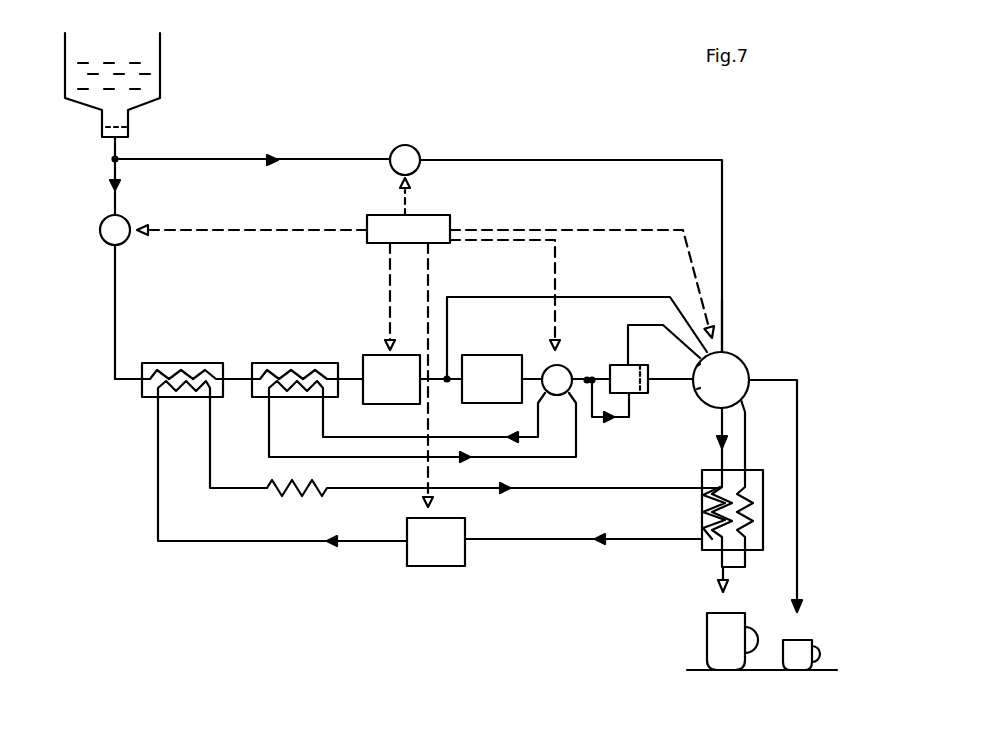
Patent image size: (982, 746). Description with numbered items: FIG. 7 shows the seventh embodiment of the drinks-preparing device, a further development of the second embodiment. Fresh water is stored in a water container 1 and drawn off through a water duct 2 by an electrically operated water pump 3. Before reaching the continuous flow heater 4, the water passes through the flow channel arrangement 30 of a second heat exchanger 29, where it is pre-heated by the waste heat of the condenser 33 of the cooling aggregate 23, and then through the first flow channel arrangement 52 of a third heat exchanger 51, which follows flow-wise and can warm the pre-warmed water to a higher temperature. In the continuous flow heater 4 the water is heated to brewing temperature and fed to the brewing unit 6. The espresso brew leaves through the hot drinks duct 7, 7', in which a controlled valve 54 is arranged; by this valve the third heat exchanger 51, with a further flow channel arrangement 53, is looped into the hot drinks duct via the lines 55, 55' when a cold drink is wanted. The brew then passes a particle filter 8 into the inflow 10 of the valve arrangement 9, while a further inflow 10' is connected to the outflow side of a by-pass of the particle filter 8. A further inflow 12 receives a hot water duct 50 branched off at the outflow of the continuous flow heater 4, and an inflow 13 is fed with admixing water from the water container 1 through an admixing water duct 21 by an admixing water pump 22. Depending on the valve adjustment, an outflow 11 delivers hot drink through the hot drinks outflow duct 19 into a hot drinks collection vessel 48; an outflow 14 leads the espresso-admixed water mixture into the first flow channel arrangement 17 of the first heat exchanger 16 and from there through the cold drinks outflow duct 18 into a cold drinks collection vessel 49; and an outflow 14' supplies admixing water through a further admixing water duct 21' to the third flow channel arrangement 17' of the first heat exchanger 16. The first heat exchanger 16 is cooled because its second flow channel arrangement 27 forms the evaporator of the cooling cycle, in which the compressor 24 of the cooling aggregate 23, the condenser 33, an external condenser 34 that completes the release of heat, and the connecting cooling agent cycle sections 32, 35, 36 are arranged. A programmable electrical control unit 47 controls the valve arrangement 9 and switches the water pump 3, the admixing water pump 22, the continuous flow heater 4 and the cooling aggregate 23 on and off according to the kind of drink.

The water container 1 is at (140, 80).
The water duct 2 is at (108, 213).
The water pump 3 is at (112, 232).
The continuous flow heater 4 is at (404, 370).
The brewing unit 6 is at (490, 370).
The hot drinks duct 7 is at (566, 351).
The hot drinks duct 7' is at (587, 362).
The particle filter 8 is at (620, 378).
The valve arrangement 9 is at (722, 377).
The inflow 10 is at (679, 402).
The further inflow 10' is at (677, 359).
The outflow 11 is at (753, 378).
The further inflow 12 is at (704, 352).
The further inflow 13 is at (727, 350).
The further outflow 14 is at (704, 439).
The further outflow 14' is at (766, 412).
The first heat exchanger 16 is at (692, 513).
The first flow channel arrangement 17 is at (715, 521).
The third flow channel arrangement 17' is at (767, 510).
The cold drinks outflow duct 18 is at (720, 577).
The hot drinks outflow duct 19 is at (797, 538).
The admixing water duct 21 is at (418, 229).
The line 21' is at (768, 447).
The admixing water pump 22 is at (406, 158).
The cooling aggregate 23 is at (394, 577).
The compressor 24 is at (440, 548).
The second flow channel arrangement 27 is at (714, 523).
The second heat exchanger 29 is at (163, 350).
The flow channel arrangement 30 is at (188, 372).
The cooling agent cycle section 32 is at (222, 542).
The condenser 33 is at (192, 384).
The external condenser 34 is at (298, 492).
The cooling agent cycle section 35 is at (592, 489).
The cooling agent cycle section 36 is at (527, 541).
The control unit 47 is at (418, 228).
The hot drinks collection vessel 48 is at (800, 656).
The cold drinks collection vessel 49 is at (725, 655).
The hot water duct 50 is at (490, 297).
The third heat exchanger 51 is at (275, 350).
The first flow channel arrangement 52 is at (293, 372).
The heat exchanger coil 53 is at (305, 384).
The valve 54 is at (557, 378).
The line 55 is at (434, 417).
The line 55' is at (450, 427).